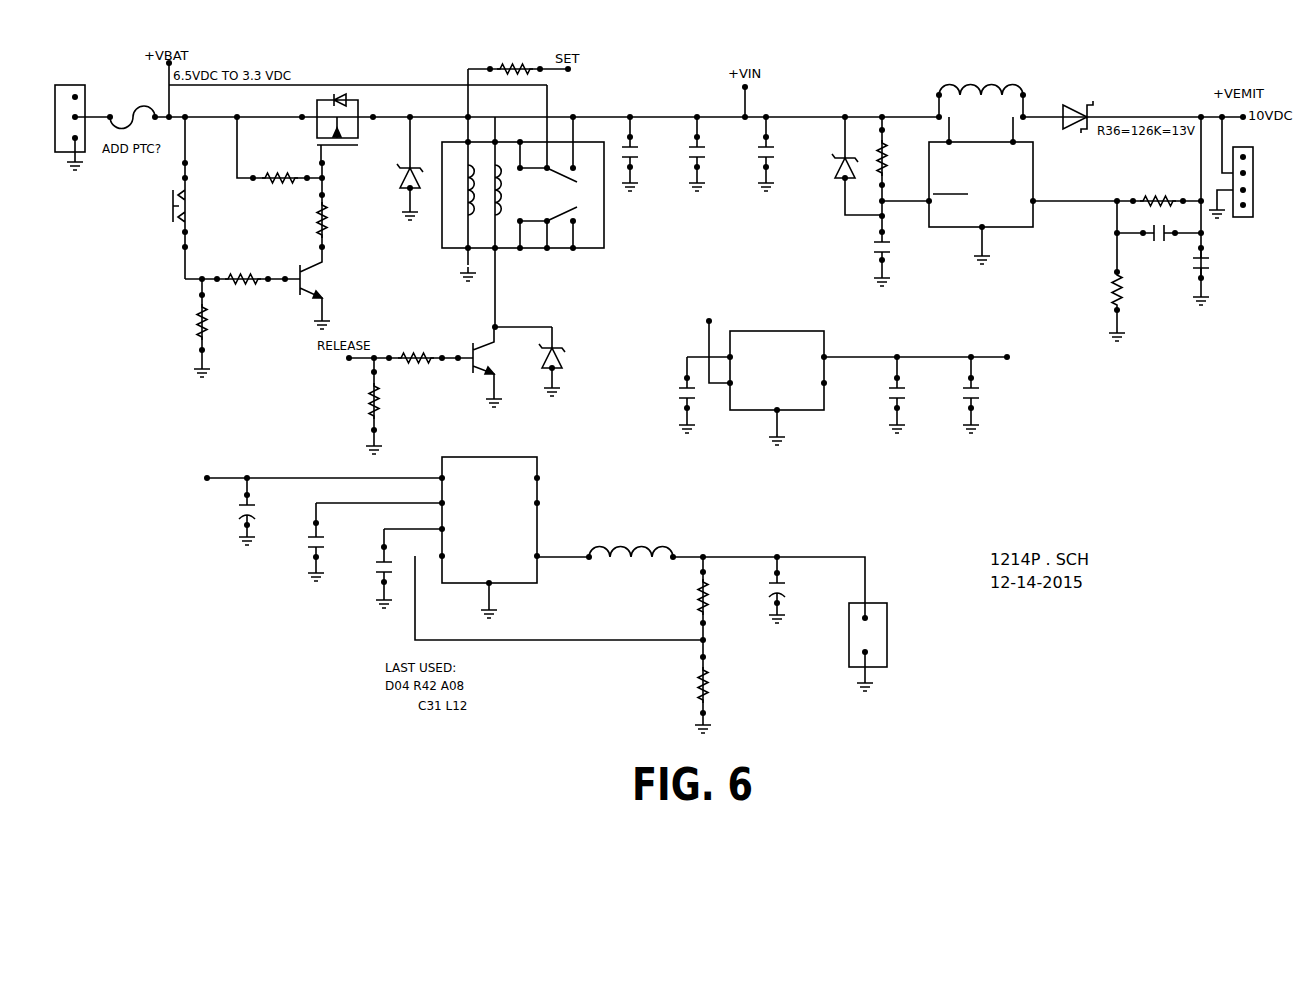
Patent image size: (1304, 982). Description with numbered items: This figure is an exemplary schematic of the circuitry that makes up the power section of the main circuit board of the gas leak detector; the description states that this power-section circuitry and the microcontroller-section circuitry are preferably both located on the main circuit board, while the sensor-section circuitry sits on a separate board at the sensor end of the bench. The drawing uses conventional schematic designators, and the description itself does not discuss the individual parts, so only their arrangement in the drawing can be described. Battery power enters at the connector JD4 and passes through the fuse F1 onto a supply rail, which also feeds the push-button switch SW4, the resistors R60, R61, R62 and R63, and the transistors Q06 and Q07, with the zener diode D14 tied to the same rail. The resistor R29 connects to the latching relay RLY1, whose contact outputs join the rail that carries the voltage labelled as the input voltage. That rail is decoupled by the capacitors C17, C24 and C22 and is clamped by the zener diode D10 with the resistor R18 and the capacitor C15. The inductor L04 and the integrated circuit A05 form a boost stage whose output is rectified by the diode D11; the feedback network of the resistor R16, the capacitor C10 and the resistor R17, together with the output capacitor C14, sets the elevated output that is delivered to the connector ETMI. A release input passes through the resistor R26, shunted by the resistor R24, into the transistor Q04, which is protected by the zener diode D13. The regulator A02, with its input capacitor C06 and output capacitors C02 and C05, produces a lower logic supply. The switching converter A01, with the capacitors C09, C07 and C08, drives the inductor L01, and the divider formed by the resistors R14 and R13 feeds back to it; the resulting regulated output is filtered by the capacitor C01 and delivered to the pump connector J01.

The battery input connector JD4 is at (70, 119).
The fuse 0.5A F1 is at (132, 98).
The push button switch SW4 is at (162, 198).
The resistor R60 is at (279, 150).
The resistor R61 is at (338, 205).
The resistor 1.0K R62 is at (242, 262).
The resistor 10K R63 is at (216, 328).
The MOSFET transistor Q06 is at (343, 129).
The NPN transistor Q07 is at (324, 288).
The zener diode 8.2V D14 is at (392, 168).
The resistor 47K R29 is at (519, 52).
The latching relay RLY1 is at (541, 183).
The capacitor 10UF C17 is at (652, 154).
The capacitor 0.1UF C24 is at (719, 154).
The capacitor 10UF C22 is at (789, 154).
The zener diode D10 is at (848, 166).
The resistor 121K R18 is at (903, 174).
The capacitor 0.1UF C15 is at (861, 257).
The inductor 10UHY L04 is at (981, 81).
The LT1930 boost converter A05 is at (989, 190).
The schottky diode MBR0520 D11 is at (1075, 97).
The resistor 93.1K R16 is at (1118, 183).
The capacitor C10 is at (1159, 236).
The resistor 13.3K R17 is at (1138, 305).
The capacitor 10UF C14 is at (1222, 275).
The emitter output connector ETMI is at (1234, 173).
The resistor 1.0K R26 is at (409, 340).
The resistor 10K R24 is at (388, 406).
The NPN transistor Q04 is at (497, 367).
The zener diode 8.2V D13 is at (574, 361).
The MIC5235-5.0 voltage regulator A02 is at (870, 371).
The capacitor 1UF C06 is at (675, 395).
The capacitor 10UF C02 is at (878, 393).
The capacitor 0.1UF C05 is at (949, 393).
The LTC1707 buck converter A01 is at (360, 519).
The capacitor 100UF C09 is at (225, 511).
The capacitor 47PF C07 is at (356, 542).
The capacitor 0.1UF C08 is at (388, 568).
The inductor 22UHY L01 is at (631, 534).
The resistor 221K R14 is at (723, 598).
The resistor 80.6K R13 is at (724, 686).
The capacitor 100UF C01 is at (791, 582).
The pump connector J01 is at (889, 638).